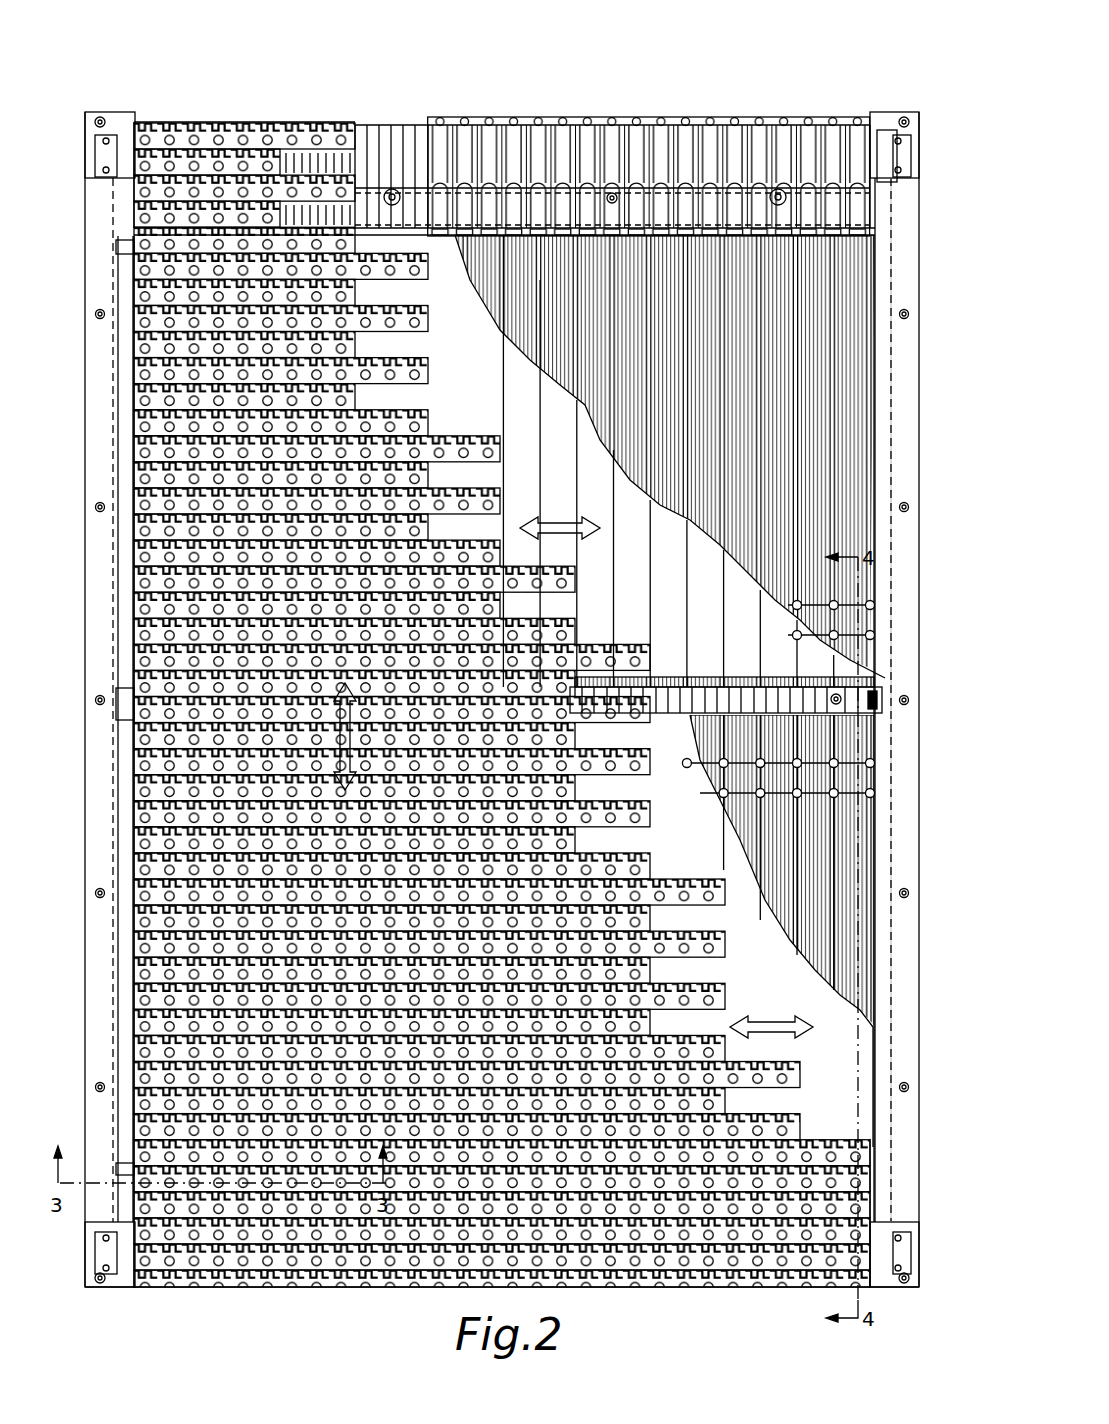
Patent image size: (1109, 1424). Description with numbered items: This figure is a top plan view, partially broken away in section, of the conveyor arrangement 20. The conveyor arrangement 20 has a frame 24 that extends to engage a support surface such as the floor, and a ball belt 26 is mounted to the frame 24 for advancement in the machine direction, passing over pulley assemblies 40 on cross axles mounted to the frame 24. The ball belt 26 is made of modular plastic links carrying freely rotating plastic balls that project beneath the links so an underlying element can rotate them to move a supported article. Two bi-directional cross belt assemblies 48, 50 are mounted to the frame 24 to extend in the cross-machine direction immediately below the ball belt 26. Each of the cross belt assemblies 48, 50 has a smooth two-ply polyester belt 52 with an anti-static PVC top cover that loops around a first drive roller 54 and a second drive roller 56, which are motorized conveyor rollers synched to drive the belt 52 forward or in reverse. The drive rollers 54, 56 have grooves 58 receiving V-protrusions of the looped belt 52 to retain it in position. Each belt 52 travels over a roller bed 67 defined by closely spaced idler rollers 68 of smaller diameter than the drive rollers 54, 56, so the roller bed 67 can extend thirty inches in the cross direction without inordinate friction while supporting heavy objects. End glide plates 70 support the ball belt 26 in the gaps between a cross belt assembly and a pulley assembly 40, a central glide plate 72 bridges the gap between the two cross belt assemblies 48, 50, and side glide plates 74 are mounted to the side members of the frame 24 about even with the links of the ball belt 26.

The conveyor arrangement 20 is at (888, 78).
The frame 24 is at (915, 162).
The ball belt 26 is at (330, 118).
The pulley assemblies 40 is at (832, 112).
The cross belt assembly 48 is at (882, 720).
The cross belt assembly 50 is at (876, 255).
The belt 52 is at (658, 587).
The first drive roller 54 is at (117, 265).
The second drive roller 56 is at (876, 485).
The grooves 58 is at (876, 603).
The roller bed 67 is at (830, 447).
The idler rollers 68 is at (650, 262).
The end glide plates 70 is at (778, 190).
The central glide plate 72 is at (690, 680).
The side glide plates 74 is at (88, 392).